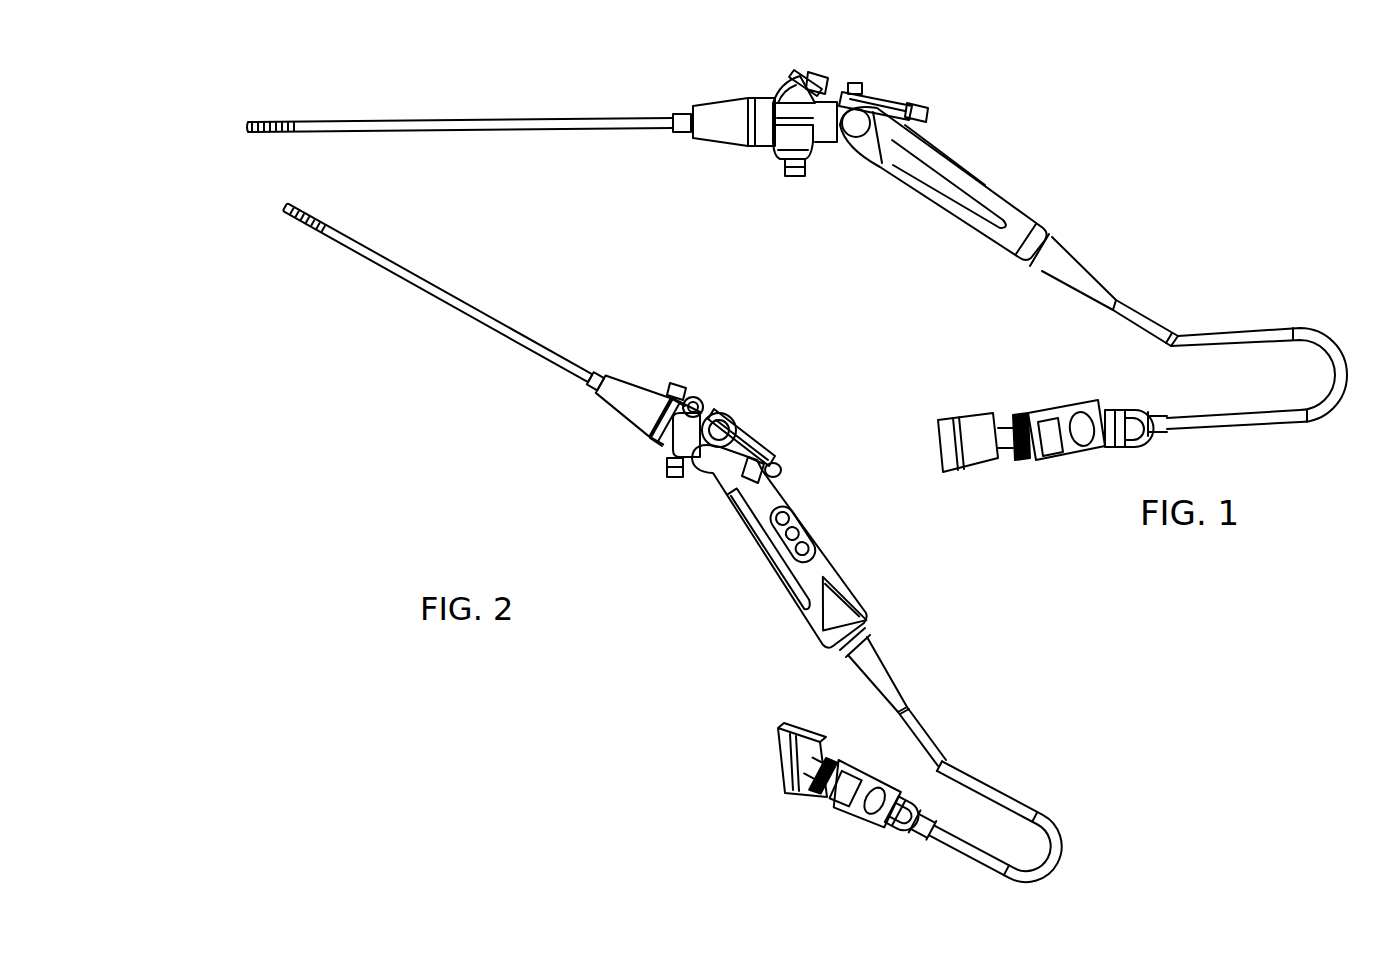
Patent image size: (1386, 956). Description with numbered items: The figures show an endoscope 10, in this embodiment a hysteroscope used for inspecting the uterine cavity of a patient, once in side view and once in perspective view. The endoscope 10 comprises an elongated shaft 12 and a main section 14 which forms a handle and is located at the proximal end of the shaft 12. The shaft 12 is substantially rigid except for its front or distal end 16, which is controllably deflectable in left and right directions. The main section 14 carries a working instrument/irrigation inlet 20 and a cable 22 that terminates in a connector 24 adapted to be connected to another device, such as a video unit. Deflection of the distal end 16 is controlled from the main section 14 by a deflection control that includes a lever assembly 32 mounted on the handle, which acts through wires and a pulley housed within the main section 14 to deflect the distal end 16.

In FIG. 1, the endoscope 10 is at (786, 278).
In FIG. 2, the endoscope 10 is at (661, 542).
In FIG. 1, the shaft 12 is at (449, 96).
In FIG. 2, the shaft 12 is at (438, 289).
In FIG. 1, the main section 14 is at (882, 173).
In FIG. 2, the main section 14 is at (750, 552).
In FIG. 1, the distal end 16 is at (268, 123).
In FIG. 2, the distal end 16 is at (297, 220).
In FIG. 1, the working instrument/irrigation inlet 20 is at (812, 72).
In FIG. 2, the working instrument/irrigation inlet 20 is at (693, 400).
In FIG. 1, the cable 22 is at (1275, 420).
In FIG. 2, the cable 22 is at (1013, 797).
In FIG. 1, the connector 24 is at (1047, 458).
In FIG. 2, the connector 24 is at (858, 823).
In FIG. 1, the lever assembly 32 is at (893, 95).
In FIG. 2, the lever assembly 32 is at (762, 455).